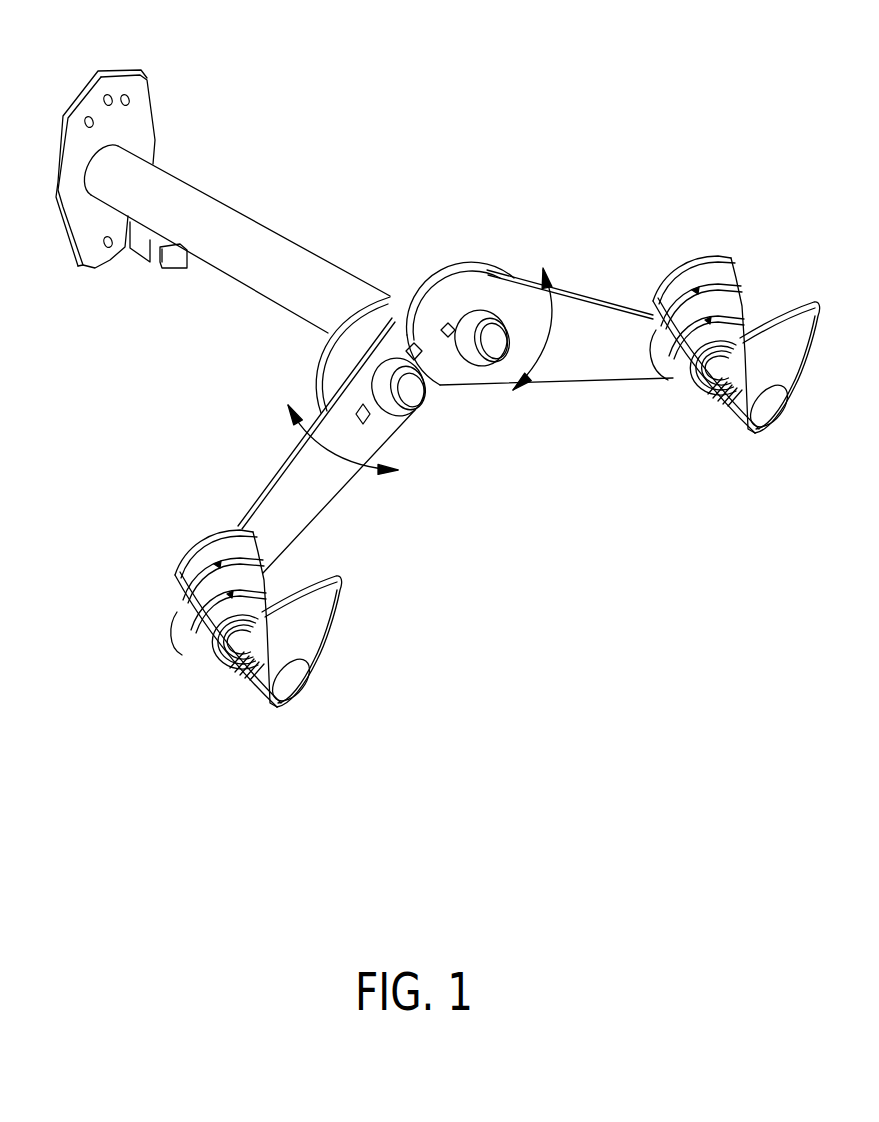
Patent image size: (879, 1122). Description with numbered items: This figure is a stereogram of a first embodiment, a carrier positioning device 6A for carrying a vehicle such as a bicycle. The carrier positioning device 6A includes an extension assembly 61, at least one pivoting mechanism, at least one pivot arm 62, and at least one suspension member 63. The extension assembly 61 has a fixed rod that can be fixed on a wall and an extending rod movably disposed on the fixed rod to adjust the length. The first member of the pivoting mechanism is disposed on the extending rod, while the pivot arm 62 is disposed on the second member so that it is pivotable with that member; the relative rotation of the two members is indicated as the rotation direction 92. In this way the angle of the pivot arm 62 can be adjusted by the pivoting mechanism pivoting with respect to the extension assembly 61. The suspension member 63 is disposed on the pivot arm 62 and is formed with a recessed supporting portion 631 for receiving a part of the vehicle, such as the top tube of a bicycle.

The carrier positioning device 6A is at (133, 383).
The extension assembly 61 is at (275, 157).
The pivot arm 62 is at (573, 360).
The suspension member 63 is at (773, 340).
The recessed supporting portion 631 is at (222, 588).
The rotation direction 92 is at (348, 463).